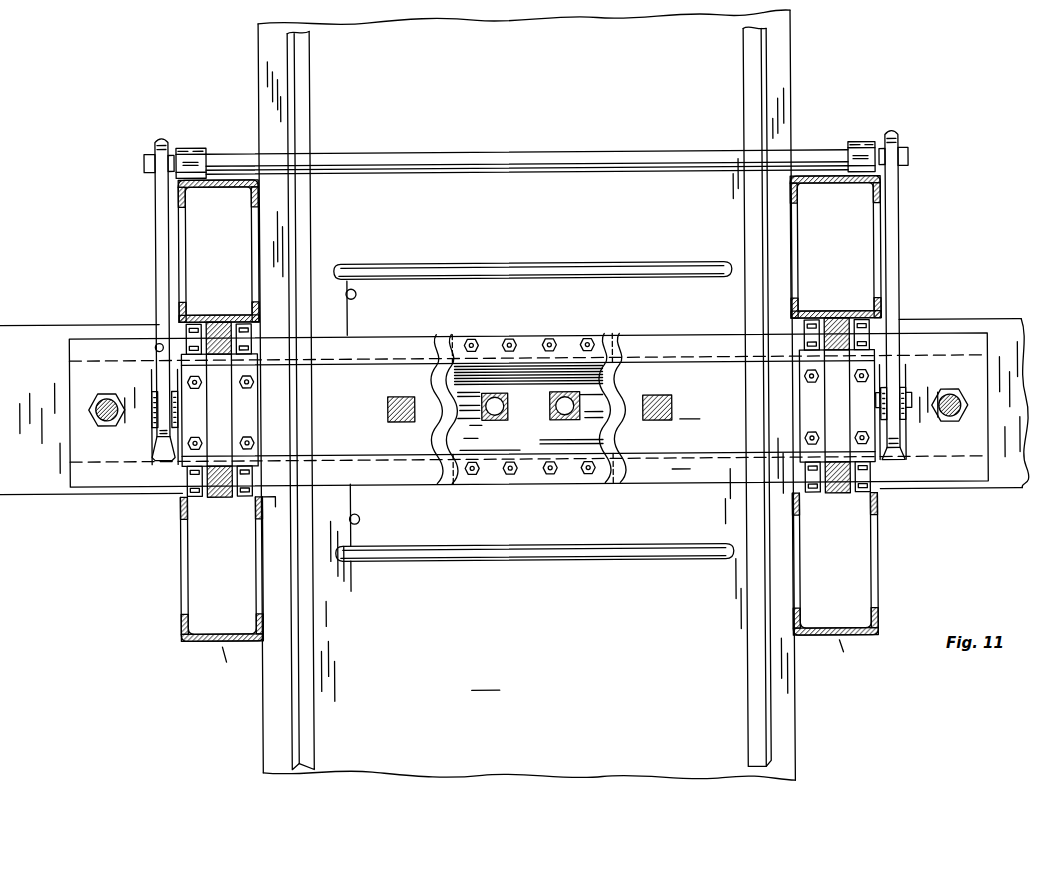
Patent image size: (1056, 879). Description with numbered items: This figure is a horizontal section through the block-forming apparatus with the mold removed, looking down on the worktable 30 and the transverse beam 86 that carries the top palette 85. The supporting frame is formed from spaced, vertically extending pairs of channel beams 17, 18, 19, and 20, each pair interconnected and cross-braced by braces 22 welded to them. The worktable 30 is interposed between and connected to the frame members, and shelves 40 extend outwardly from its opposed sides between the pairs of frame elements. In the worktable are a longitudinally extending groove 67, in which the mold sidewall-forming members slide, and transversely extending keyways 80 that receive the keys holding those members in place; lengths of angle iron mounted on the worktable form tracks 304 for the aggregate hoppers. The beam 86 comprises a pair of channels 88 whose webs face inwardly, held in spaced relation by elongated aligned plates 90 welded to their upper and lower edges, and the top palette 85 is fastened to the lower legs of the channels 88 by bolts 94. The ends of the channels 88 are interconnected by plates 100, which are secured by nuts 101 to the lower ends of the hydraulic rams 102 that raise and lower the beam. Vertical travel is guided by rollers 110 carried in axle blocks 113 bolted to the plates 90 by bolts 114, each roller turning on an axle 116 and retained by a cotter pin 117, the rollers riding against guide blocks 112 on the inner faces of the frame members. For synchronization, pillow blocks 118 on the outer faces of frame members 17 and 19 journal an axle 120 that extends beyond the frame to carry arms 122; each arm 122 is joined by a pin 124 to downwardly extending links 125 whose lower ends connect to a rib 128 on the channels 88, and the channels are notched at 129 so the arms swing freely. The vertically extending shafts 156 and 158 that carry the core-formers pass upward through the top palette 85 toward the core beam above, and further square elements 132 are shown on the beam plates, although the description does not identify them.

The channel beam 17 is at (224, 192).
The channel beam 18 is at (222, 665).
The channel beam 19 is at (831, 190).
The channel beam 20 is at (840, 657).
The brace 22 is at (190, 596).
The worktable 30 is at (486, 681).
The shelf 40 is at (30, 466).
The longitudinally extending groove 67 is at (346, 293).
The transversely extending keyway 80 is at (586, 263).
The top palette 85 is at (464, 452).
The beam 86 is at (701, 462).
The channel 88 is at (680, 476).
The plate 90 is at (348, 385).
The bolt 94 is at (470, 340).
The plate 100 is at (78, 372).
The nut 101 is at (90, 420).
The ram 102 is at (106, 415).
The roller 110 is at (192, 333).
The guide block 112 is at (218, 320).
The axle block 113 is at (252, 402).
The bolt 114 is at (256, 380).
The axle 116 is at (246, 320).
The cotter pin 117 is at (270, 507).
The pillow block 118 is at (190, 146).
The axle 120 is at (345, 152).
The arm 122 is at (165, 213).
The pin 124 is at (154, 420).
The link 125 is at (180, 456).
The rib 128 is at (890, 440).
The notch 129 is at (158, 344).
The block 132 is at (388, 416).
The shaft 156 is at (534, 415).
The shaft 158 is at (486, 420).
The track 304 is at (752, 105).